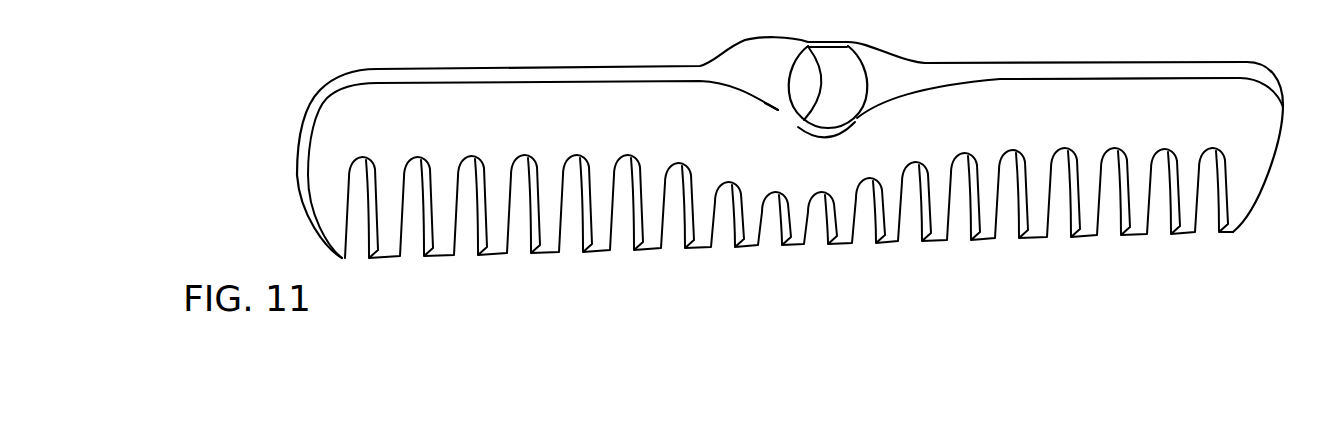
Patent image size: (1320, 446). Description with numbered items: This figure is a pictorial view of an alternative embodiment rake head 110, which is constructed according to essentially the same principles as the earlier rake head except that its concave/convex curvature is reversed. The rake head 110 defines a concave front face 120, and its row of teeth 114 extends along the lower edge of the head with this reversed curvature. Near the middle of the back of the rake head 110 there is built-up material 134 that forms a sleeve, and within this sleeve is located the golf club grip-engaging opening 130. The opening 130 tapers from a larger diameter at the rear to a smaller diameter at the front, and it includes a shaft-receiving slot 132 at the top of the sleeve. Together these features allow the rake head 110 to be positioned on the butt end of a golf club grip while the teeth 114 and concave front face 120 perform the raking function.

The rake head 110 is at (355, 115).
The teeth 114 is at (595, 245).
The concave front face 120 is at (1125, 124).
The golf club grip-engaging opening 130 is at (846, 84).
The shaft-receiving slot 132 is at (827, 42).
The built-up material 134 is at (790, 115).